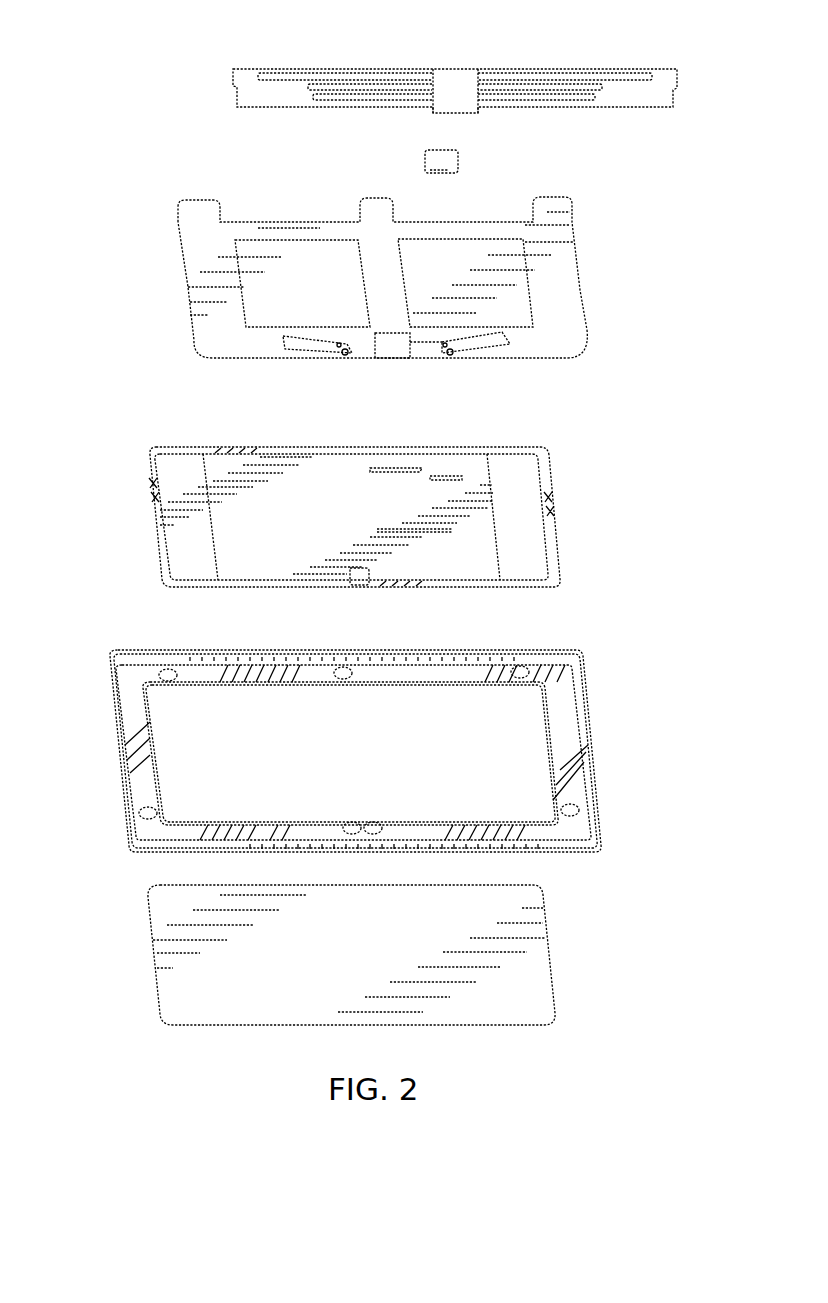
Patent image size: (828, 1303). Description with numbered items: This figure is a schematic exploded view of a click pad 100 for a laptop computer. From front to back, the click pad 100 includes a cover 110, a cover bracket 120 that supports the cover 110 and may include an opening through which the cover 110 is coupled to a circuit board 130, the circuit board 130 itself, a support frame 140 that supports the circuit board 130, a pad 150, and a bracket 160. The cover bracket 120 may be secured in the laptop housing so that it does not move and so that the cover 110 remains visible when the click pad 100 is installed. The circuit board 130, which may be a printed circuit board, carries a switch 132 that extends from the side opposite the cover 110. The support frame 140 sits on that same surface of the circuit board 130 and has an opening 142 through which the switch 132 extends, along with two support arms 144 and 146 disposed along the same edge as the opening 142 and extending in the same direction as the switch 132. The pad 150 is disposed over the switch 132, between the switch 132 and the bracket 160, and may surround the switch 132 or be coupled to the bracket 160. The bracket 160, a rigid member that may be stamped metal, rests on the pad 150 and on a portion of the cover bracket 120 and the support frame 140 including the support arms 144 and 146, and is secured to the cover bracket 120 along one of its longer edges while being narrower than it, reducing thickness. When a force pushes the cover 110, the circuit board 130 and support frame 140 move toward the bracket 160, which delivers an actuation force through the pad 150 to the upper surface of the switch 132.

The click pad 100 is at (556, 36).
The cover 110 is at (155, 987).
The cover bracket 120 is at (113, 717).
The circuit board 130 is at (152, 525).
The switch 132 is at (357, 587).
The support frame 140 is at (185, 262).
The opening 142 is at (393, 345).
The support arm 144 is at (468, 347).
The support arm 146 is at (320, 350).
The pad 150 is at (424, 158).
The bracket 160 is at (236, 93).